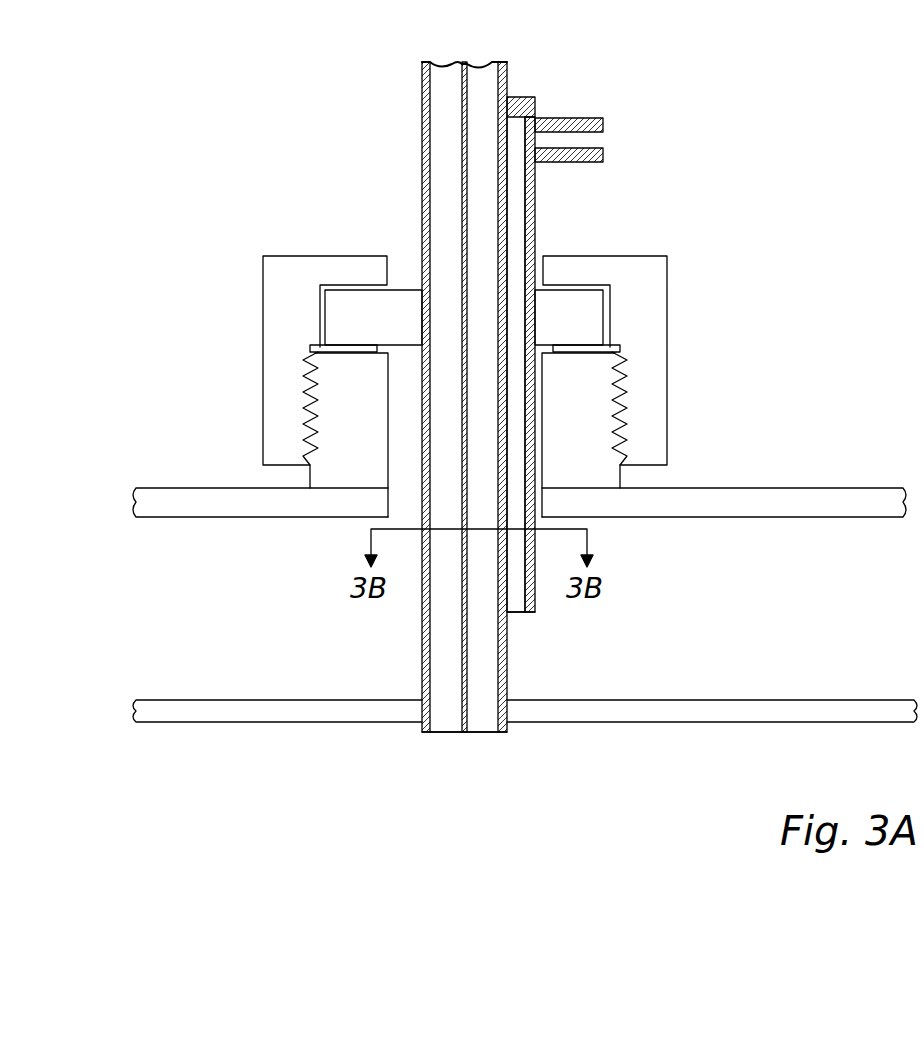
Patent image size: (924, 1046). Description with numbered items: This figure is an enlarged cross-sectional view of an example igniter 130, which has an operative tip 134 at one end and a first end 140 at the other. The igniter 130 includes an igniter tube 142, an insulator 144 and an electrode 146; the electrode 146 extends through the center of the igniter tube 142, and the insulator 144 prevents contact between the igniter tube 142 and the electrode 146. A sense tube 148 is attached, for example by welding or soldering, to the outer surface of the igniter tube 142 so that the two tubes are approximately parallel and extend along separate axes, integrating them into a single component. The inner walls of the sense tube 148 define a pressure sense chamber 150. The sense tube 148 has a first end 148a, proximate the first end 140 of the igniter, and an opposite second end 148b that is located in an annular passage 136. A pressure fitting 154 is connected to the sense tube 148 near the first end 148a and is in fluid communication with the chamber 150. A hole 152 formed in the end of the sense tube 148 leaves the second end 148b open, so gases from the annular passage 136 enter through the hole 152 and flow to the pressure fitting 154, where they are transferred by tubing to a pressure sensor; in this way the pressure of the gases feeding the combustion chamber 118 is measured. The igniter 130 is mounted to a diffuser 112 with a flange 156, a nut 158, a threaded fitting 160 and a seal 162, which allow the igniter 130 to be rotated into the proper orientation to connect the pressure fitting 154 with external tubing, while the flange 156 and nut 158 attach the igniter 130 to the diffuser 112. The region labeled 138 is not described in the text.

The diffuser 112 is at (167, 480).
The combustion chamber 118 is at (170, 693).
The igniter 130 is at (332, 102).
The operative tip 134 is at (447, 744).
The annular passage 136 is at (272, 602).
The region below second plate 138 is at (279, 782).
The first end 140 is at (480, 52).
The igniter tube 142 is at (503, 249).
The insulator 144 is at (447, 143).
The electrode 146 is at (464, 193).
The sense tube 148 is at (546, 190).
The first end 148a is at (520, 95).
The second end 148b is at (536, 615).
The pressure sense chamber 150 is at (516, 222).
The hole 152 is at (515, 614).
The pressure fitting 154 is at (595, 124).
The flange 156 is at (340, 308).
The nut 158 is at (285, 277).
The threaded fitting 160 is at (312, 478).
The seal 162 is at (345, 349).